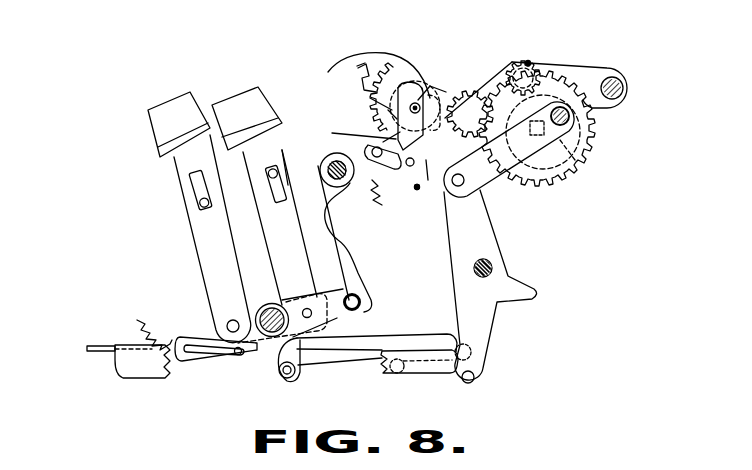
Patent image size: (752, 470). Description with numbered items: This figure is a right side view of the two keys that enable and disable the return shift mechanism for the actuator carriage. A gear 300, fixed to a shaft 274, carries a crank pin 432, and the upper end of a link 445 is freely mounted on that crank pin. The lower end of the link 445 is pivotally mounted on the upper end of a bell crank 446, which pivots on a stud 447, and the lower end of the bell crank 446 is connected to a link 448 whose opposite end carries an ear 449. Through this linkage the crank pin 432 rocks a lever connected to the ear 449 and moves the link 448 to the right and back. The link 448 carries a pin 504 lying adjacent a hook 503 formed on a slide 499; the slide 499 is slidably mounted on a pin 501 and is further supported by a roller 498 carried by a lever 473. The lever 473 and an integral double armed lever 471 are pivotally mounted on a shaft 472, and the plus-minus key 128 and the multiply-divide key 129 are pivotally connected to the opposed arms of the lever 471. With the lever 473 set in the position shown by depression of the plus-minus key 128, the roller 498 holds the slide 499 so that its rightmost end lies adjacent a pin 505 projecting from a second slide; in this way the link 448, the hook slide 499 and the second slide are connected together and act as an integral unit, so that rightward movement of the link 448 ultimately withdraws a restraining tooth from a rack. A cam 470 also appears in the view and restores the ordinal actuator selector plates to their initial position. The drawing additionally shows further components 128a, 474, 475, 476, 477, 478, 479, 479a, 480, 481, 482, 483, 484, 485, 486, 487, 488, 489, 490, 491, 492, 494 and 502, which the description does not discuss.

The plus-minus key 128 is at (232, 103).
The key lever slot 128a is at (272, 205).
The multiply-divide key 129 is at (163, 127).
The shaft 274 is at (572, 168).
The gear 300 is at (556, 70).
The crank pin 432 is at (598, 128).
The link 445 is at (487, 172).
The bell crank 446 is at (487, 238).
The stud 447 is at (493, 268).
The link 448 is at (128, 378).
The ear 449 is at (108, 346).
The cam 470 is at (590, 153).
The double armed lever 471 is at (272, 306).
The shaft 472 is at (257, 353).
The lever 473 is at (283, 378).
The link 474 is at (349, 293).
The lever 475 is at (358, 258).
The spring 476 is at (380, 195).
The pivot pin 477 is at (330, 162).
The ratchet wheel 478 is at (387, 82).
The cam plate 479 is at (428, 140).
The ratchet 479a is at (405, 148).
The stop pin 480 is at (427, 185).
The bell crank 481 is at (367, 150).
The cam 482 is at (381, 68).
The pawl 483 is at (421, 103).
The pawl tip 484 is at (385, 112).
The pawl 485 is at (380, 105).
The gear 486 is at (448, 98).
The link 487 is at (466, 100).
The arm 488 is at (602, 70).
The pivot pin 489 is at (625, 89).
The pawl 490 is at (529, 61).
The hook 491 is at (366, 66).
The hook arm 492 is at (362, 86).
The stop 494 is at (416, 188).
The roller 498 is at (282, 382).
The slide 499 is at (368, 340).
The pin 501 is at (230, 343).
The spring 502 is at (190, 357).
The hook 503 is at (412, 378).
The pin 504 is at (392, 370).
The pin 505 is at (472, 350).